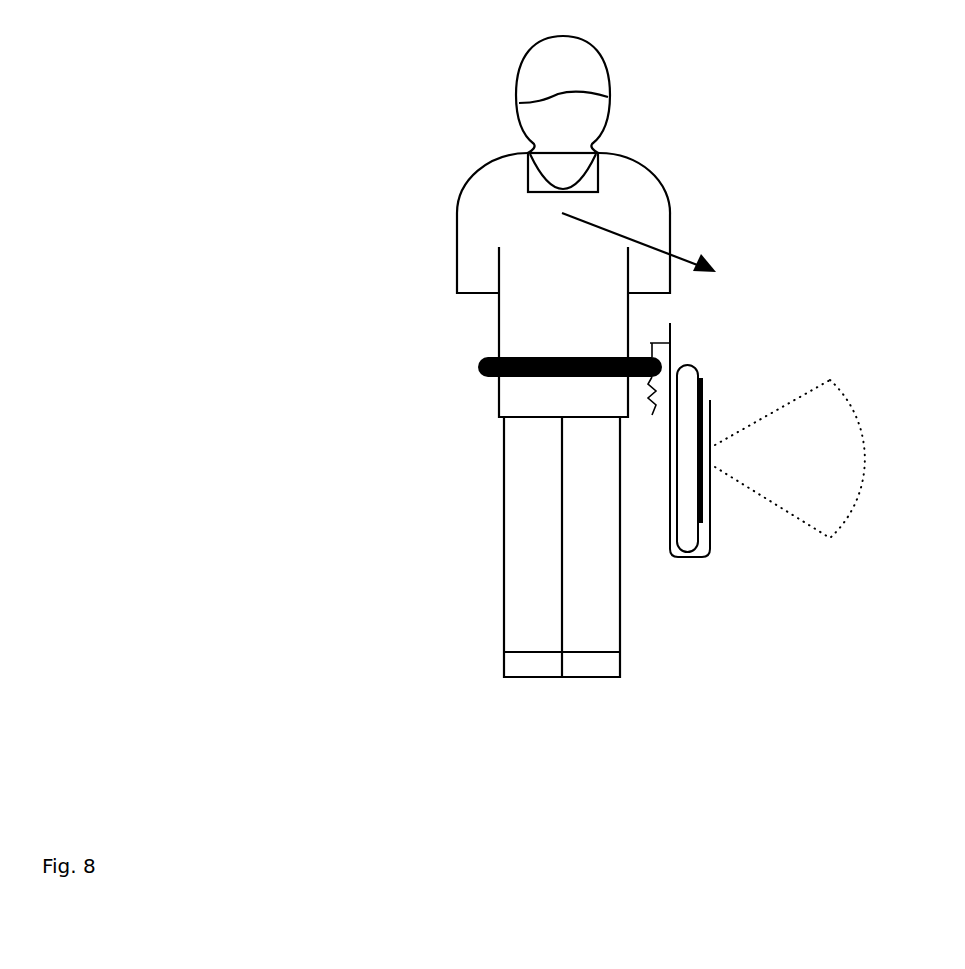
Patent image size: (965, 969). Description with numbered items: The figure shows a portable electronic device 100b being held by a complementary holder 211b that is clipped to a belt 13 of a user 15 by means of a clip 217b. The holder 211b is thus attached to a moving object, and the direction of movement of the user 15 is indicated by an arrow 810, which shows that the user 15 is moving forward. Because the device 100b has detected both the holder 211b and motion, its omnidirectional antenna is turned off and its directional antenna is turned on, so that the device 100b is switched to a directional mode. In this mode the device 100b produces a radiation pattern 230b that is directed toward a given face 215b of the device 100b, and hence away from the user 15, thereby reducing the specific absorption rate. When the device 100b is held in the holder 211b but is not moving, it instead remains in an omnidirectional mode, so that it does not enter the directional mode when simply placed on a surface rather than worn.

The user 15 is at (472, 188).
The belt 13 is at (481, 356).
The arrow 810 is at (680, 255).
The device 100b is at (699, 369).
The holder 211b is at (686, 558).
The face 215b is at (712, 390).
The clip 217b is at (653, 417).
The radiation pattern 230b is at (843, 387).